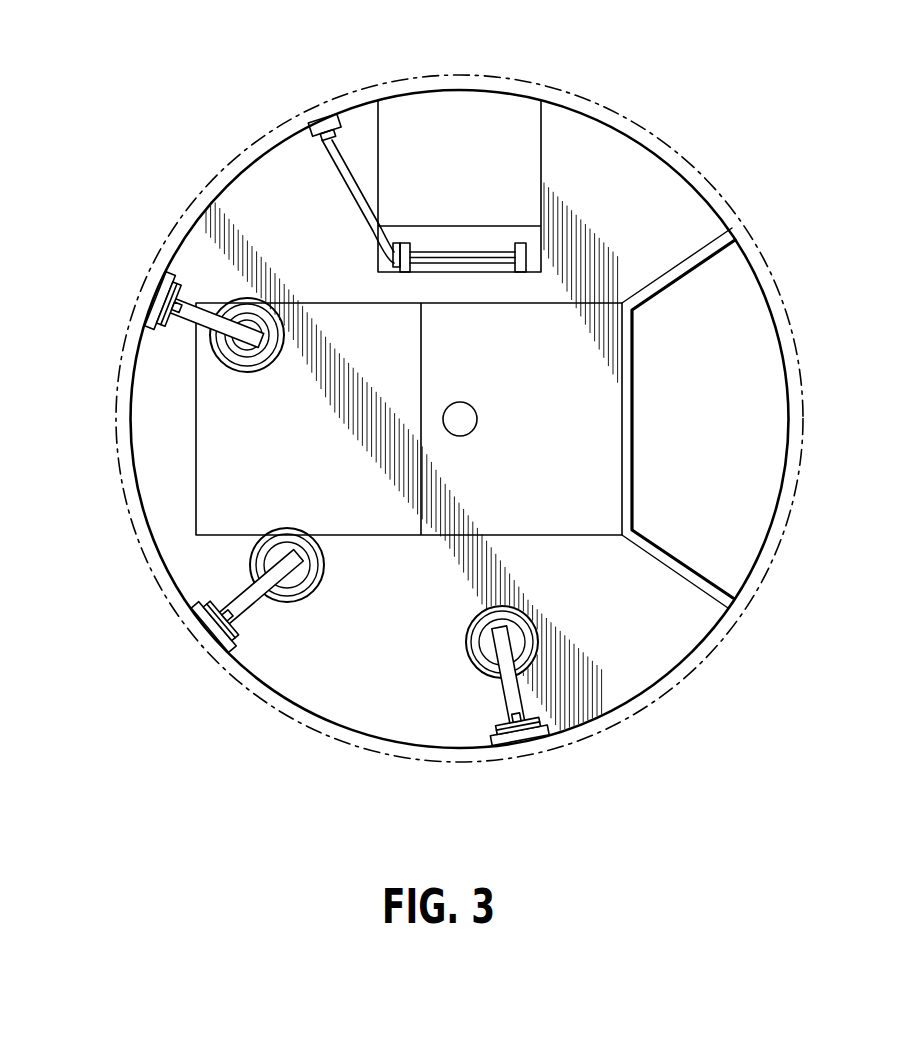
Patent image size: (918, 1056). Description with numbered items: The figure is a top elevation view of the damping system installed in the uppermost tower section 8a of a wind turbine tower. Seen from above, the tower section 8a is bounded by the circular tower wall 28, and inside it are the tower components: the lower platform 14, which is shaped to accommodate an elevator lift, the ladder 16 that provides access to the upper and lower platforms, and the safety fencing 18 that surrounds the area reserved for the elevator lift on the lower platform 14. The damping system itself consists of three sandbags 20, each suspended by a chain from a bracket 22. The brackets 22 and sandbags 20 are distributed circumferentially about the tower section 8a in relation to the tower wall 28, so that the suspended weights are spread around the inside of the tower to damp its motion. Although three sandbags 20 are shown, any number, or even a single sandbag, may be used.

The uppermost tower section 8a is at (564, 92).
The lower platform 14 is at (273, 191).
The ladder 16 is at (472, 252).
The safety fencing 18 is at (672, 283).
The sandbags 20 is at (252, 298).
The bracket 22 is at (181, 318).
The tower wall 28 is at (131, 432).